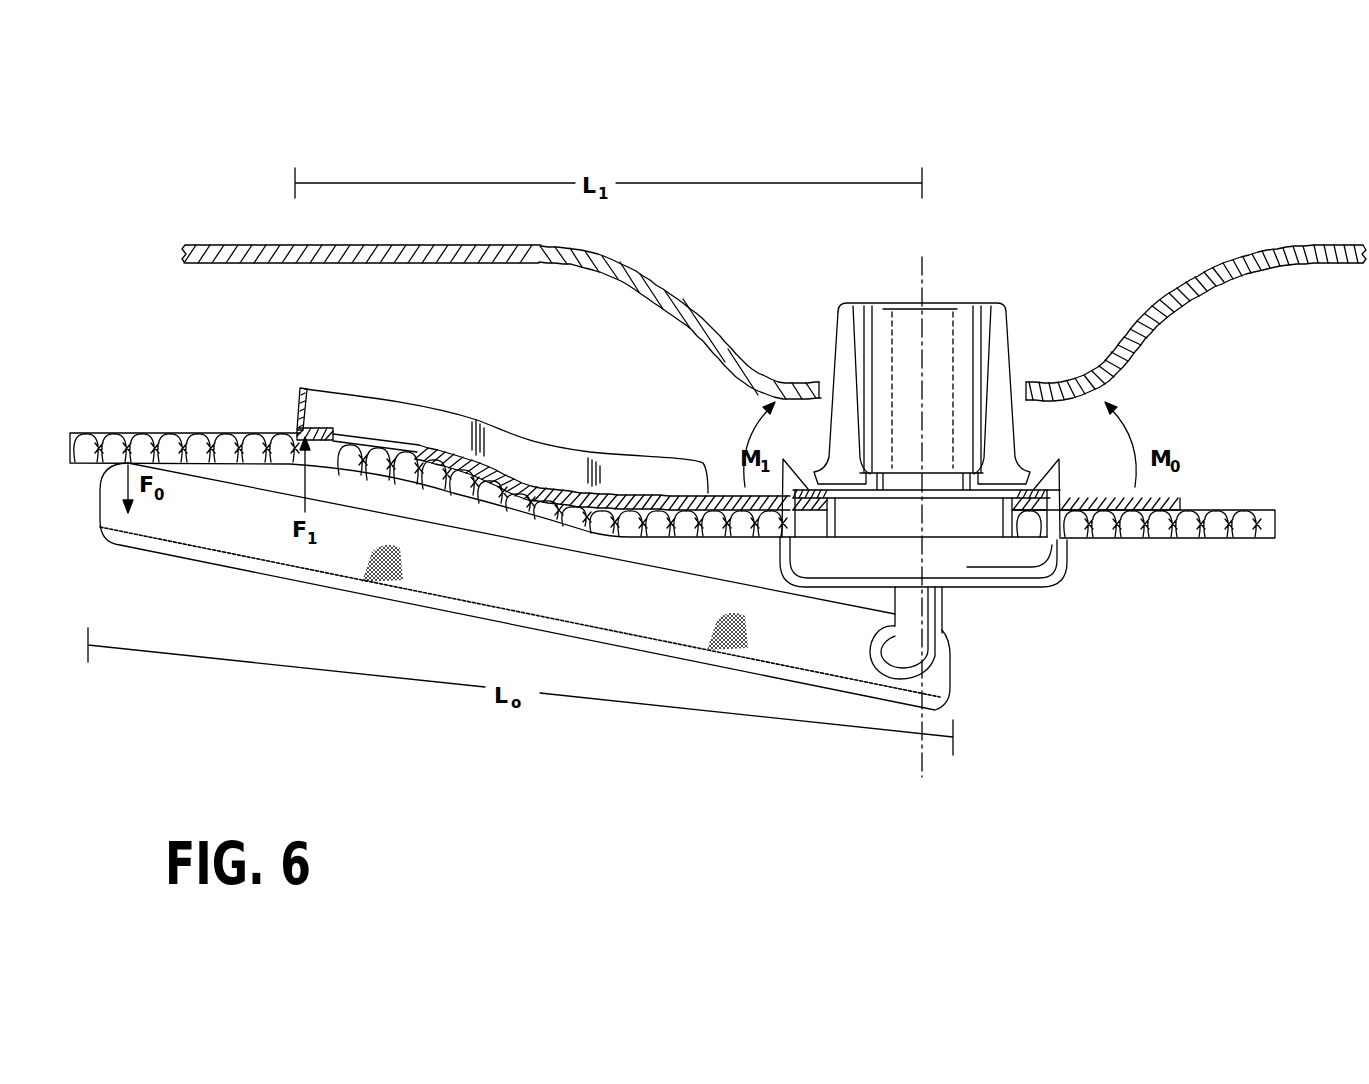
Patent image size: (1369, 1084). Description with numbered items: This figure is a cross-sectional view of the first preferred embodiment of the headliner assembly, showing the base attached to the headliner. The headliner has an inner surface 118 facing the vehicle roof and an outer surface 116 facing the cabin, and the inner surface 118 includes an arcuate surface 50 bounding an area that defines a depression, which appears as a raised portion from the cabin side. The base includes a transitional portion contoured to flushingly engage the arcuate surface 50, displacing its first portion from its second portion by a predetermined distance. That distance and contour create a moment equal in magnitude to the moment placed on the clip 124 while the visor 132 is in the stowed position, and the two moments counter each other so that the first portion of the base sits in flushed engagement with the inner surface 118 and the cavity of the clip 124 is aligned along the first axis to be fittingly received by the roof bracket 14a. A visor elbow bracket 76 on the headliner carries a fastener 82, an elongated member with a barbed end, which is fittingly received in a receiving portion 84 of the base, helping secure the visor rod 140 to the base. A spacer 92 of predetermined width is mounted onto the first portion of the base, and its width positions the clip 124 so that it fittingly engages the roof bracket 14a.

The roof bracket 14a is at (697, 318).
The visor elbow bracket 76 is at (920, 279).
The fastener 140 is at (946, 299).
The clip 124 is at (1015, 344).
The fastener 82 is at (1062, 482).
The receiving portion 84 is at (1042, 485).
The spacer 92 is at (1180, 500).
The substrate foam 116 is at (1175, 539).
The inner surface 118 is at (520, 481).
The arcuate surface 50 is at (453, 494).
The visor 132 is at (612, 727).